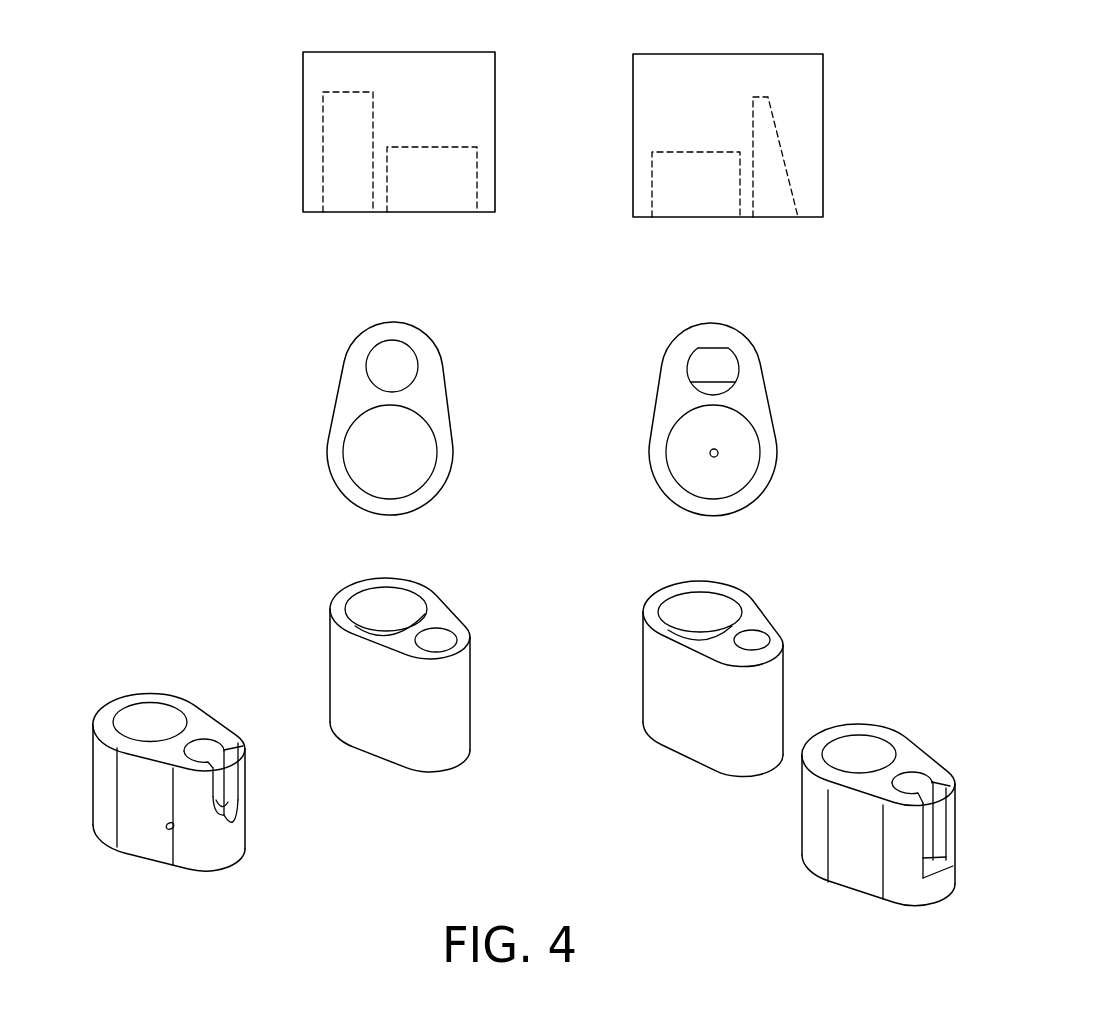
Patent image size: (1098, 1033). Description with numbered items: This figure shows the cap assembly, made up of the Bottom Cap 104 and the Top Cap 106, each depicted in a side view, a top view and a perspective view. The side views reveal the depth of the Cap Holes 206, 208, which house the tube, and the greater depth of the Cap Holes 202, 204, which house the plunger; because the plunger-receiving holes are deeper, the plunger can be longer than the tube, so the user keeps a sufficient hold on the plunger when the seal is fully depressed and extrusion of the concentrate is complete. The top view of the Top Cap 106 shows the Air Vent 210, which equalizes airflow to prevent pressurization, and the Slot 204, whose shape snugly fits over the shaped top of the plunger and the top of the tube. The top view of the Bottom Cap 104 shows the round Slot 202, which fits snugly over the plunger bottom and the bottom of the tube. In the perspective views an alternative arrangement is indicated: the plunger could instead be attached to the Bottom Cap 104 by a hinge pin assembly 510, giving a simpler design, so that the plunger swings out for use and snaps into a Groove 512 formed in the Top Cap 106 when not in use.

The Bottom Cap 104 is at (765, 490).
The Top Cap 106 is at (337, 482).
The Cap Hole 202 is at (342, 108).
The Cap Hole 204 is at (765, 127).
The Cap Hole 206 is at (420, 190).
The Cap Hole 208 is at (722, 190).
The Air Vent 210 is at (722, 453).
The hinge pin assembly 510 is at (232, 778).
The Groove 512 is at (938, 805).